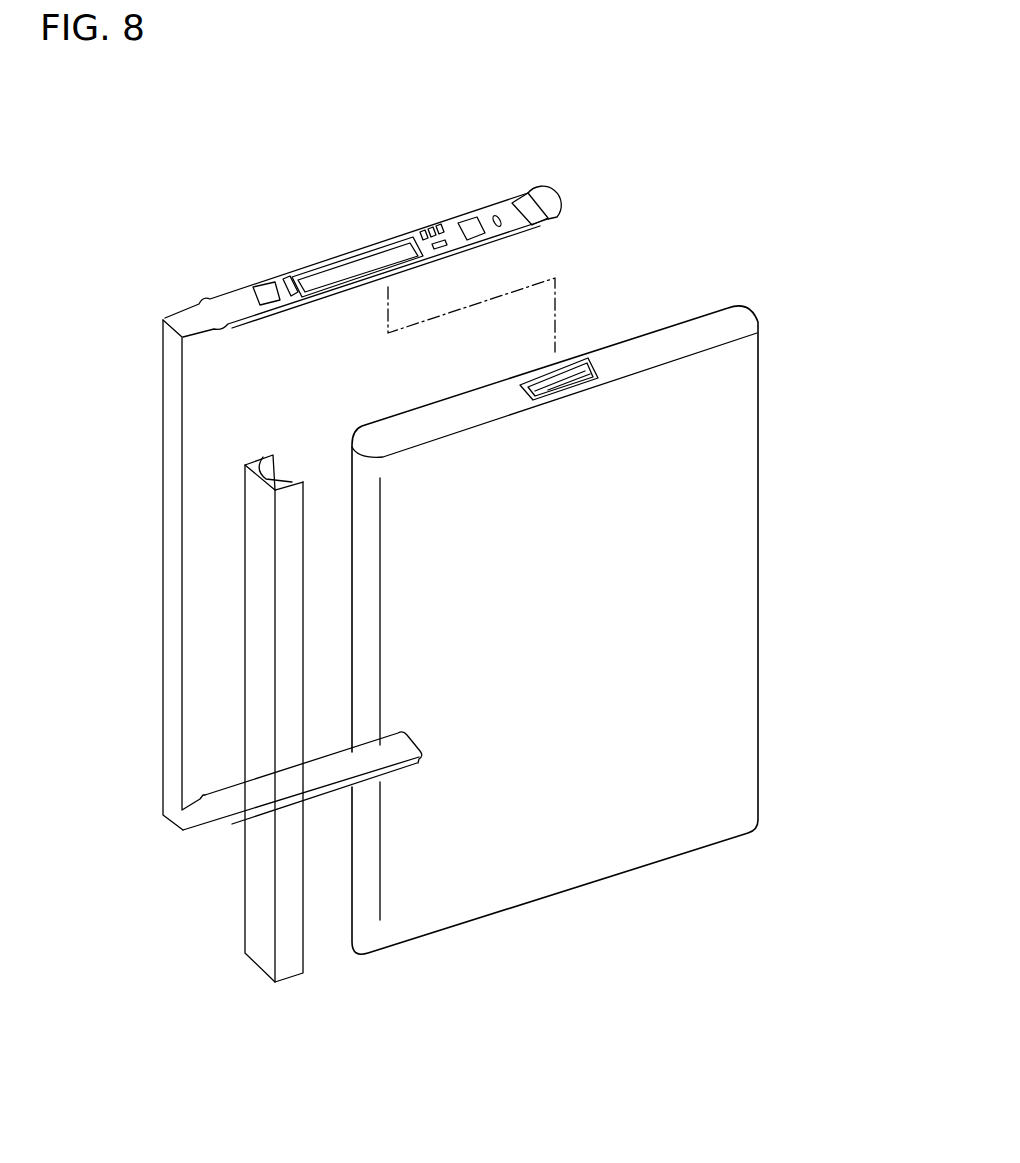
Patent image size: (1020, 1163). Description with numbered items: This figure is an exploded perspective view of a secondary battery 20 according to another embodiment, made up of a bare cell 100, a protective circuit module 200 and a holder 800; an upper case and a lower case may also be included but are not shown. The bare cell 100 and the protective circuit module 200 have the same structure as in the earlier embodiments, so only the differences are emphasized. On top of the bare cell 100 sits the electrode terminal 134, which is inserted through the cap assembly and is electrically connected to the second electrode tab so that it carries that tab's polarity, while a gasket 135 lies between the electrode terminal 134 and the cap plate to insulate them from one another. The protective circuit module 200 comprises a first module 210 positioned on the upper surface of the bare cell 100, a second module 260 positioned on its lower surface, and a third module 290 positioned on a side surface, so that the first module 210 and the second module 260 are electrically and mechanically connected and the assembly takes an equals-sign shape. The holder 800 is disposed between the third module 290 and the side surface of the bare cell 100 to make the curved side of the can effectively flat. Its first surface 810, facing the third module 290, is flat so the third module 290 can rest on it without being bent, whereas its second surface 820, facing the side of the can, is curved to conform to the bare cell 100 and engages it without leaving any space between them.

The secondary battery 20 is at (320, 197).
The bare cell 100 is at (785, 413).
The electrode terminal 134 is at (552, 377).
The gasket 135 is at (592, 362).
The protective circuit module 200 is at (241, 584).
The first module 210 is at (210, 298).
The second module 260 is at (230, 814).
The third module 290 is at (165, 598).
The holder 800 is at (216, 694).
The first surface 810 is at (257, 513).
The second surface 820 is at (293, 481).